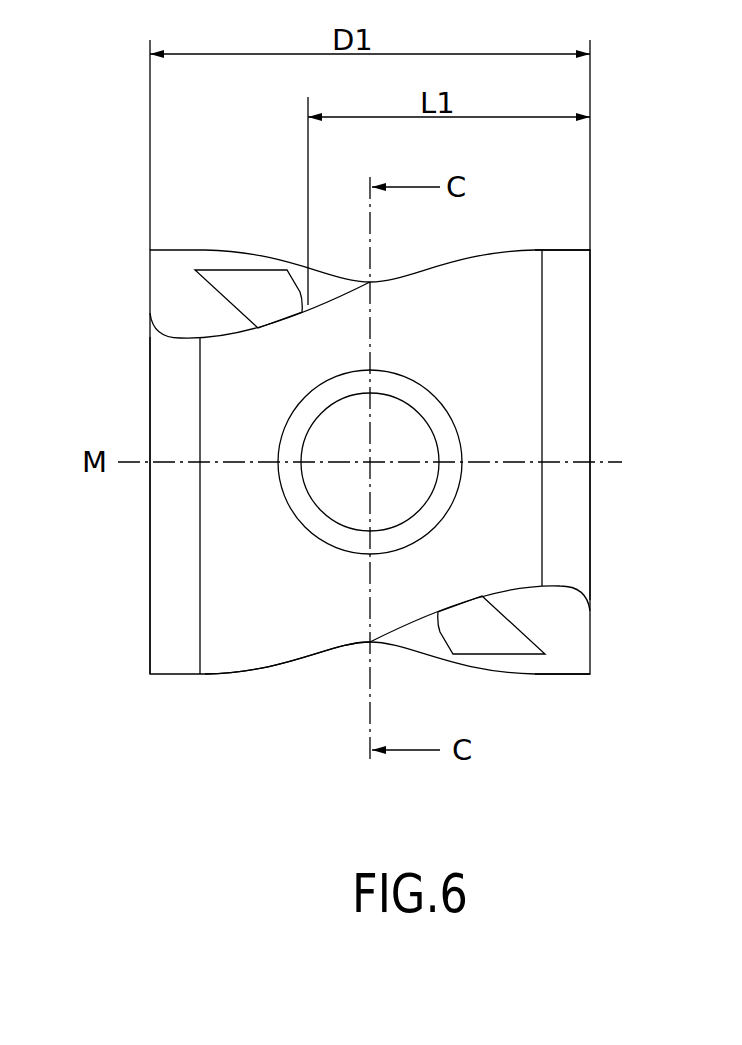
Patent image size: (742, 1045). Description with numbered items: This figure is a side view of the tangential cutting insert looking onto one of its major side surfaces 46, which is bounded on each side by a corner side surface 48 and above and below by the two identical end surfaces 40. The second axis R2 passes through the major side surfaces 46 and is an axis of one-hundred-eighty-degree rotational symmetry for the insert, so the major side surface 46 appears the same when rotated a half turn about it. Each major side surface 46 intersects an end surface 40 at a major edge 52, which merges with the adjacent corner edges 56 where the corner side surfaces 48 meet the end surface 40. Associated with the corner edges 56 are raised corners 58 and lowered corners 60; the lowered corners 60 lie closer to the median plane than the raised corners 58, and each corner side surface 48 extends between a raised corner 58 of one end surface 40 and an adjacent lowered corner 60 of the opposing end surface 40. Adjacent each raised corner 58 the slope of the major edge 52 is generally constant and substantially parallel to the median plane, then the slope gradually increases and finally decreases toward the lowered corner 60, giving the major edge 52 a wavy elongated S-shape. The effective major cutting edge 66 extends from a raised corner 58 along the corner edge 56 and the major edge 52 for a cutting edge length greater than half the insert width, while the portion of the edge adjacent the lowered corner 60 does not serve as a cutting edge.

The end surface 40 is at (180, 262).
The major side surface 46 is at (277, 620).
The corner side surface 48 is at (565, 527).
The major edge 52 is at (467, 252).
The corner edge 56 is at (575, 250).
The raised corner 58 is at (597, 680).
The lowered corner 60 is at (167, 328).
The effective major cutting edge 66 is at (513, 250).
The second axis R2 is at (370, 462).